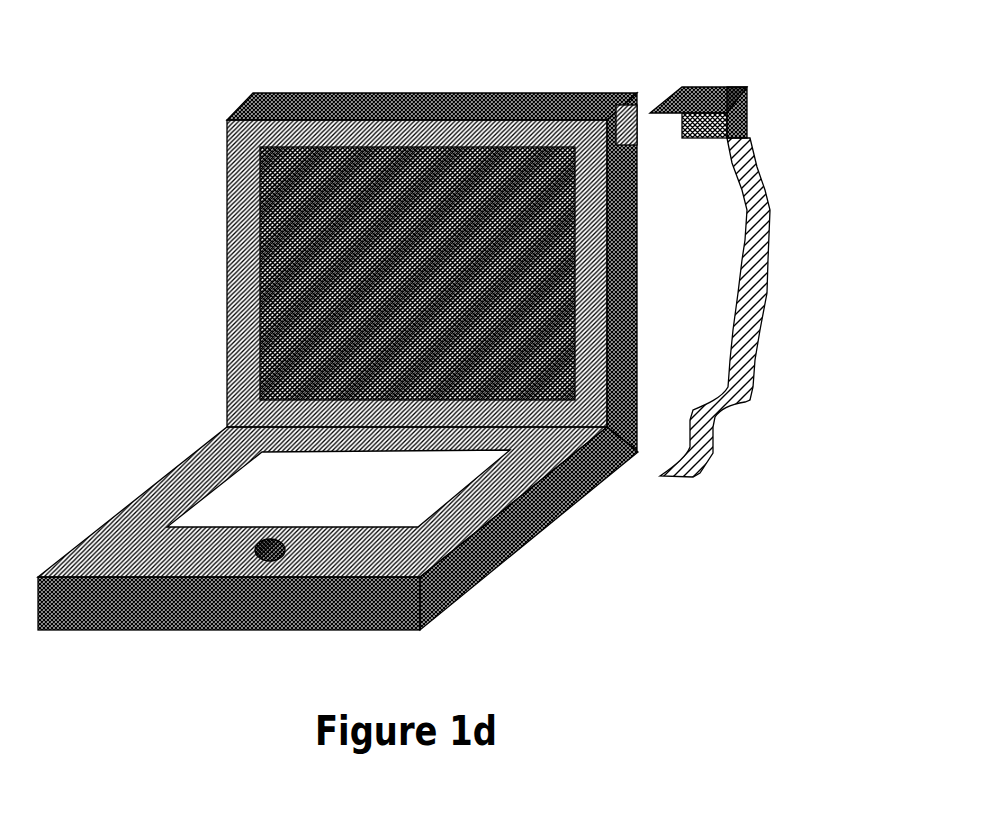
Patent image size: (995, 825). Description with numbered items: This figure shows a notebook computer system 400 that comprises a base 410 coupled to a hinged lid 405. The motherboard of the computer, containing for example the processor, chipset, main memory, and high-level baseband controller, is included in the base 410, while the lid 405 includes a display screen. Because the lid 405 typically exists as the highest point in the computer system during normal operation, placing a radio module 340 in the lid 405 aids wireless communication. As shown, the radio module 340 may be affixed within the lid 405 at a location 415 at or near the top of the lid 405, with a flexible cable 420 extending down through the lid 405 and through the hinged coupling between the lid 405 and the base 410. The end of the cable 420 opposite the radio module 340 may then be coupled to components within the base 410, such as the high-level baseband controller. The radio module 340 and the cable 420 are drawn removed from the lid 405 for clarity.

The notebook computer system 400 is at (338, 330).
The hinged lid 405 is at (432, 240).
The base 410 is at (158, 478).
The location 415 is at (595, 90).
The radio module 340 is at (696, 78).
The flexible cable 420 is at (766, 353).